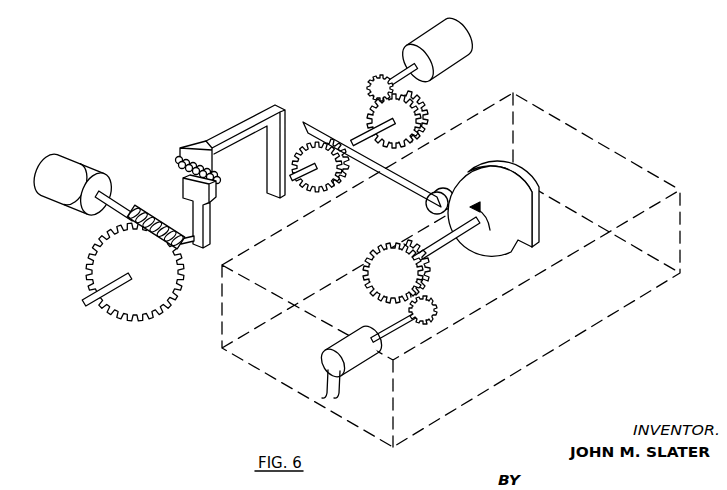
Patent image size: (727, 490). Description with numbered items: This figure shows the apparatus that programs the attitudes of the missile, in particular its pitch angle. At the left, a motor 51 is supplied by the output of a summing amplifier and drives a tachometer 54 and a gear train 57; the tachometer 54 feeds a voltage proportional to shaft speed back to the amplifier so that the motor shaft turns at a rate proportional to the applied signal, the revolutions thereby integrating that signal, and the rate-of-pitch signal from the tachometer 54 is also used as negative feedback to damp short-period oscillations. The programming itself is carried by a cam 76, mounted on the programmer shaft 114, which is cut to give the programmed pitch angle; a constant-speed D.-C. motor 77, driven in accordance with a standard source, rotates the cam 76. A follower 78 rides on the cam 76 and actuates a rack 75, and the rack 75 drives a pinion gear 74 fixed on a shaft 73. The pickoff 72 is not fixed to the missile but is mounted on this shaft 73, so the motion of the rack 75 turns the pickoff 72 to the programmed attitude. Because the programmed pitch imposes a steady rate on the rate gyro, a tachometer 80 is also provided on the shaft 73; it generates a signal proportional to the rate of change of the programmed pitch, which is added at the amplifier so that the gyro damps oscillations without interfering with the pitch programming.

The motor 51 is at (53, 153).
The tachometer 54 is at (88, 179).
The gear train 57 is at (148, 211).
The pickoff 72 is at (200, 145).
The shaft 73 is at (294, 188).
The pinion gear 74 is at (325, 185).
The rack 75 is at (361, 166).
The cam 76 is at (527, 182).
The motor 77 is at (356, 370).
The follower 78 is at (442, 191).
The tachometer 80 is at (463, 44).
The programmer shaft 114 is at (431, 252).